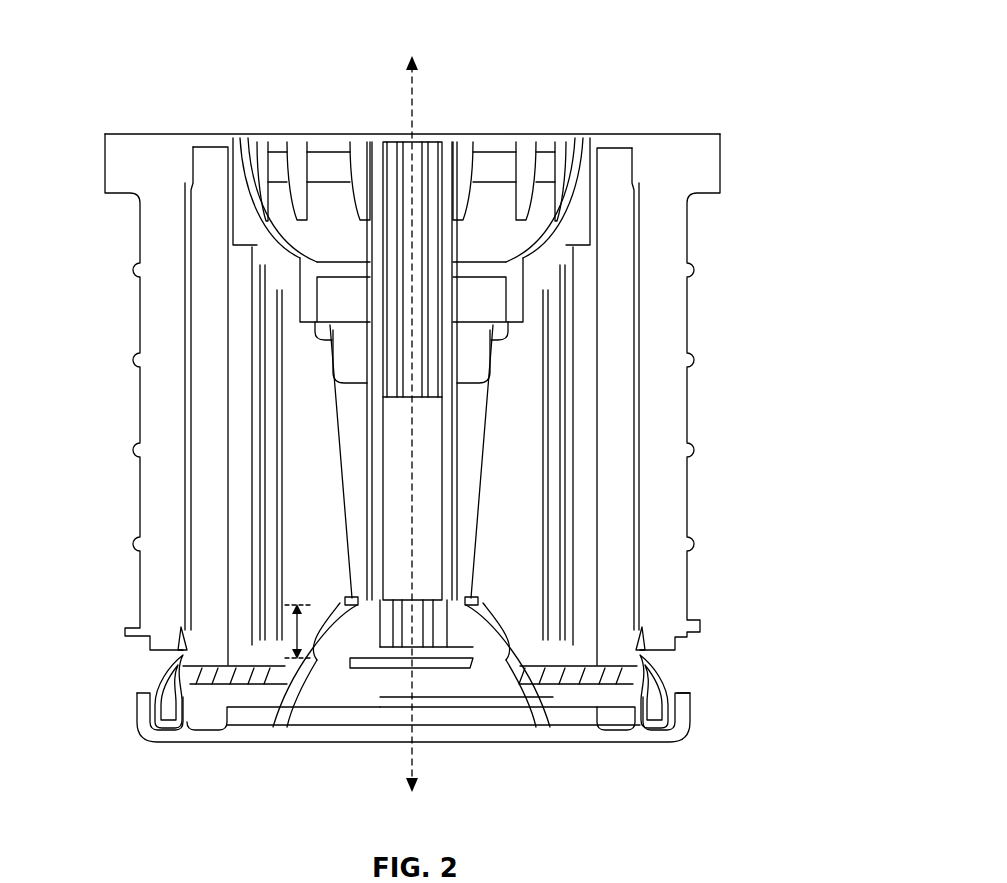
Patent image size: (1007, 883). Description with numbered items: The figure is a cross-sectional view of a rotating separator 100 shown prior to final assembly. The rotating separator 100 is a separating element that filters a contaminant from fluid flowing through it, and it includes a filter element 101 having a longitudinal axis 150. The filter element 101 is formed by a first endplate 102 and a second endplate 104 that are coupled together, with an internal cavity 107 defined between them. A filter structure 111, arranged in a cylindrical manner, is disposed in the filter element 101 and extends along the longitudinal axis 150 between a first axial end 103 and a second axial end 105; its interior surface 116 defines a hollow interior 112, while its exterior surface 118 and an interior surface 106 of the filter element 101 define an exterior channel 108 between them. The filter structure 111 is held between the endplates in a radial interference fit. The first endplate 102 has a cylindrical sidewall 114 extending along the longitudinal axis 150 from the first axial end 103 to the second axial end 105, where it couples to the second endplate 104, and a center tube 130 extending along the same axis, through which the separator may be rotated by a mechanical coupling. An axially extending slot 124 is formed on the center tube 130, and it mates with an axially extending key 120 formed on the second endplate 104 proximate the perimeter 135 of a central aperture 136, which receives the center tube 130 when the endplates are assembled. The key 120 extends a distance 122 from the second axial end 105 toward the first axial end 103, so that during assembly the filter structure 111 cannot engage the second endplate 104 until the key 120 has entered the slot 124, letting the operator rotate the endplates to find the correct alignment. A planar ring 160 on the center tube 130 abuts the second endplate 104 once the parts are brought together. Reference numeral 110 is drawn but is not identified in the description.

The rotating separator 100 is at (688, 65).
The filter element 101 is at (690, 377).
The first endplate 102 is at (668, 150).
The first axial end 103 is at (738, 165).
The second endplate 104 is at (652, 740).
The second axial end 105 is at (128, 752).
The interior surface of the filter element 106 is at (645, 575).
The internal cavity 107 is at (520, 481).
The exterior channel 108 is at (185, 650).
The inner column 110 is at (613, 430).
The filter structure 111 is at (617, 283).
The hollow interior 112 is at (590, 538).
The sidewall 114 is at (668, 343).
The interior surface of the filter structure 116 is at (603, 610).
The exterior surface of the filter structure 118 is at (195, 342).
The key 120 is at (283, 722).
The distance 122 is at (187, 730).
The slot 124 is at (345, 590).
The center tube 130 is at (380, 474).
The perimeter 135 is at (375, 655).
The central aperture 136 is at (452, 700).
The longitudinal axis 150 is at (415, 97).
The planar ring 160 is at (556, 705).